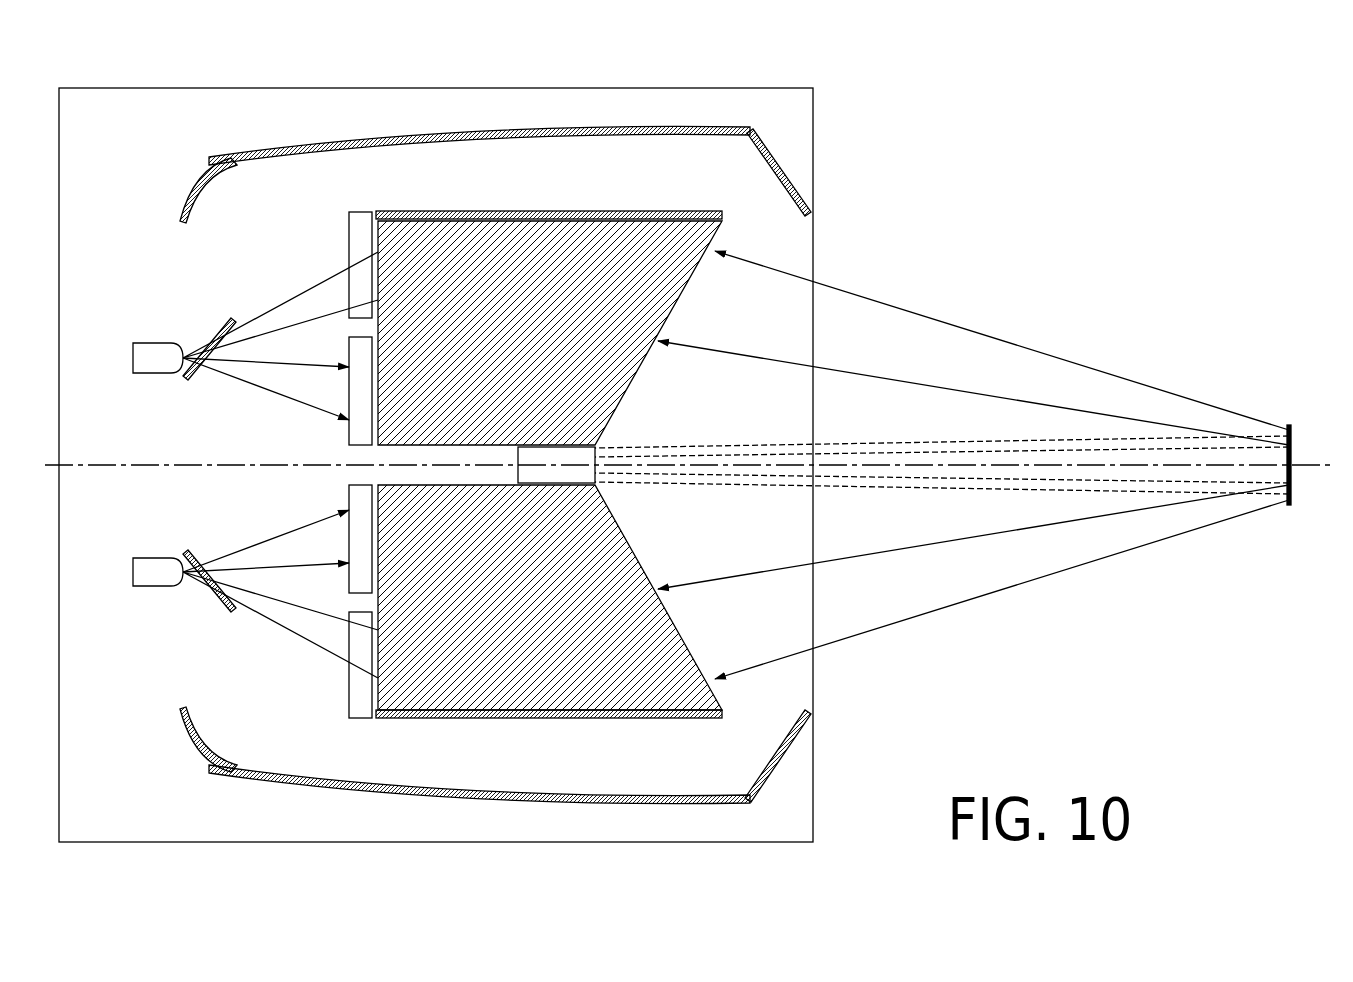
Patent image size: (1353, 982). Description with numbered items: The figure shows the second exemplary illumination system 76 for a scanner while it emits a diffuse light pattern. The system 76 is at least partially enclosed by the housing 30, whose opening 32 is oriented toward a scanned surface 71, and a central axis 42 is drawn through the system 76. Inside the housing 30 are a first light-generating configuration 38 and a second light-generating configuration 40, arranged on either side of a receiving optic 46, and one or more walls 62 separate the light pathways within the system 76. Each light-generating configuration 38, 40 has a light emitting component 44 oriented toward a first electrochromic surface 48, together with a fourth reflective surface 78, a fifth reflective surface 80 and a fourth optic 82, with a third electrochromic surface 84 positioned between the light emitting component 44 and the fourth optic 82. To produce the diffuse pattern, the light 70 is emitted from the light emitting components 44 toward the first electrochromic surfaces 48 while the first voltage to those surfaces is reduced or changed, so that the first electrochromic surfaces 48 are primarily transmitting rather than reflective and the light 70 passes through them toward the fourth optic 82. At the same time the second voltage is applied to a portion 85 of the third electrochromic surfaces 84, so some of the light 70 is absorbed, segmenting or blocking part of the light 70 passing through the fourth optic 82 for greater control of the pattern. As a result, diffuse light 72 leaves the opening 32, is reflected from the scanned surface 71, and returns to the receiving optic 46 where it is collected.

The housing 30 is at (133, 88).
The opening 32 is at (820, 251).
The first light-generating configuration 38 is at (230, 263).
The second light-generating configuration 40 is at (230, 663).
The optical axis 42 is at (147, 468).
The light emitting component 44 is at (131, 355).
The receiving optic 46 is at (555, 456).
The first electrochromic surface 48 is at (228, 318).
The walls 62 is at (538, 130).
The light 70 is at (200, 343).
The scanned surface 71 is at (1292, 432).
The diffuse light 72 is at (972, 331).
The second exemplary illumination system 76 is at (236, 448).
The fourth reflective surface 78 is at (203, 190).
The fifth reflective surface 80 is at (772, 165).
The fourth optic 82 is at (548, 302).
The third electrochromic surface 84 is at (353, 240).
The portion 85 is at (358, 437).